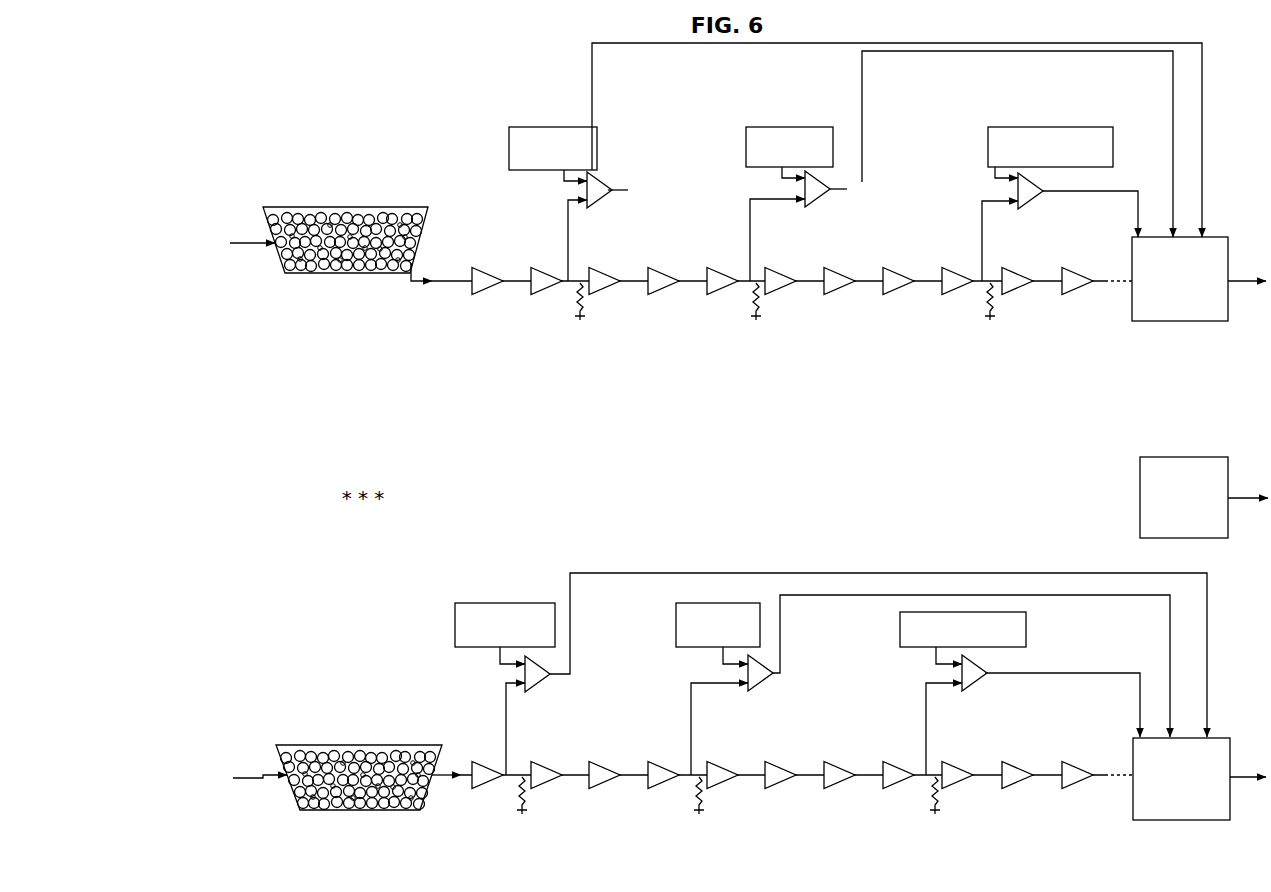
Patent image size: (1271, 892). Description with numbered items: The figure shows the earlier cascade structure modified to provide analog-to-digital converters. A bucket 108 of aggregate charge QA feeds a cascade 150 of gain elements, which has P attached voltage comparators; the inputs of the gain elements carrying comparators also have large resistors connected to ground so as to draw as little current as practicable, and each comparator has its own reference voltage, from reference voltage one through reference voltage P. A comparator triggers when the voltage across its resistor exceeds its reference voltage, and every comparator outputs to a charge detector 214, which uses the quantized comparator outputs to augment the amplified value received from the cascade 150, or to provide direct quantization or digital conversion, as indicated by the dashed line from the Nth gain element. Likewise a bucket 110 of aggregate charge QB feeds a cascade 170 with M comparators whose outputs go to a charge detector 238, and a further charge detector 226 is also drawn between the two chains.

The bucket 108 is at (297, 203).
The bucket 110 is at (373, 697).
The cascade 150 is at (668, 318).
The cascade 170 is at (890, 490).
The charge detector 214 is at (1199, 279).
The charge detector 226 is at (1204, 497).
The charge detector 238 is at (1199, 779).